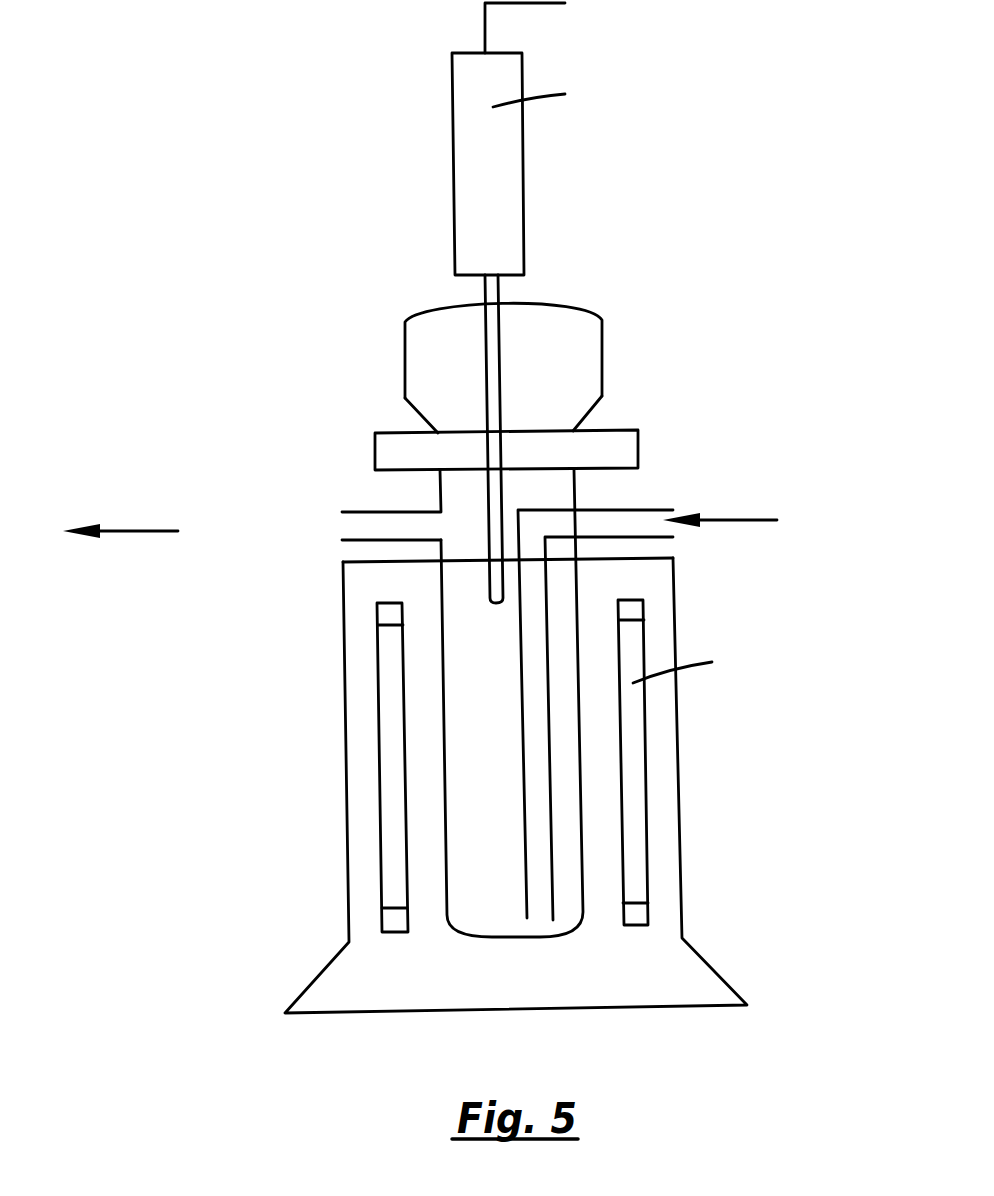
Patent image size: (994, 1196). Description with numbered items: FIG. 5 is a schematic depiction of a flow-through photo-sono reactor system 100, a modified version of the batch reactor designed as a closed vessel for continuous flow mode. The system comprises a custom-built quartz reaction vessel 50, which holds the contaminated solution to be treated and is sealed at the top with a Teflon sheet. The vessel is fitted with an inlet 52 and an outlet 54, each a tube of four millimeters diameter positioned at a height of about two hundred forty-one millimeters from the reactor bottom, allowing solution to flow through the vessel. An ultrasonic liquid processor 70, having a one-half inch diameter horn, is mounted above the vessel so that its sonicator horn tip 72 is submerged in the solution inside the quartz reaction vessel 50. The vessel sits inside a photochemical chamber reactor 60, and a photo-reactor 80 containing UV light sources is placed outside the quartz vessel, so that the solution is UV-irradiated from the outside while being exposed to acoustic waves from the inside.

The reactor system 100 is at (368, 244).
The ultrasonic liquid processor 70 is at (500, 200).
The sonicator horn tip 72 is at (493, 384).
The quartz reaction vessel 50 is at (592, 373).
The outlet tube 54 is at (373, 527).
The inlet tube 52 is at (615, 520).
The photochemical chamber reactor 60 is at (463, 488).
The photo-reactor 80 is at (398, 795).